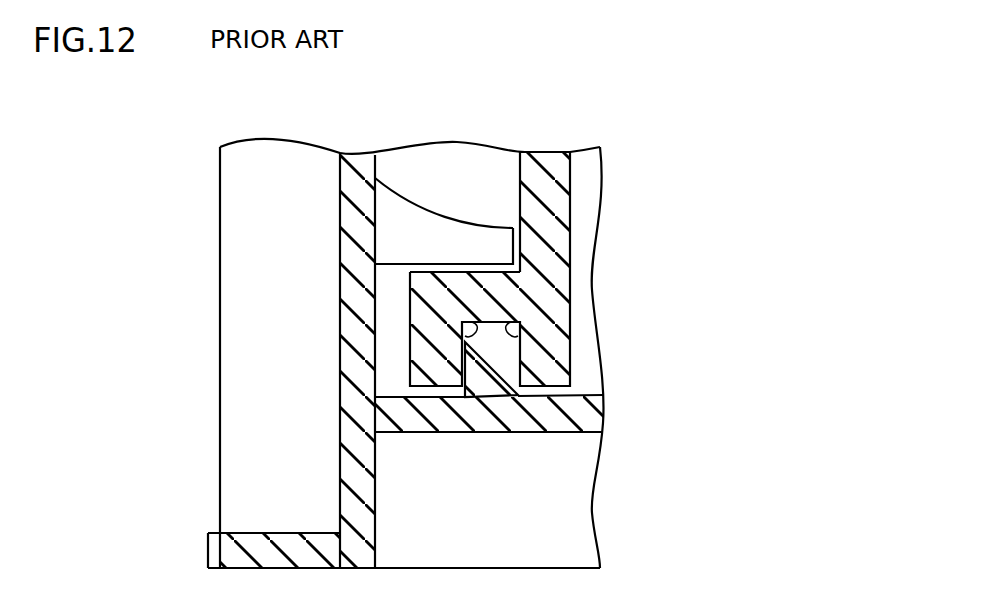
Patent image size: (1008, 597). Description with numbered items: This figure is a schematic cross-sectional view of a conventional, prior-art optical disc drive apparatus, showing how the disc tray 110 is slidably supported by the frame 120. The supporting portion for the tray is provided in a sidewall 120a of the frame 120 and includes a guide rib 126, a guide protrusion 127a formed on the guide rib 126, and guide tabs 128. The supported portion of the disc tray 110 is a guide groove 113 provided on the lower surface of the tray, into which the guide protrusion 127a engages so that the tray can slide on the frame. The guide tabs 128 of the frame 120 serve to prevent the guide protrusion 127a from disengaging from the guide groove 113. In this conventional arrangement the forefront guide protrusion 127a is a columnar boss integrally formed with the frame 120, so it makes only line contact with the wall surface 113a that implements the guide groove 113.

The disc tray 110 is at (406, 321).
The guide groove 113 is at (406, 329).
The wall surface 113a is at (470, 322).
The frame 120 is at (345, 353).
The sidewall 120a is at (357, 365).
The guide rib 126 is at (531, 387).
The guide protrusion 127a is at (497, 358).
The guide tabs 128 is at (428, 235).